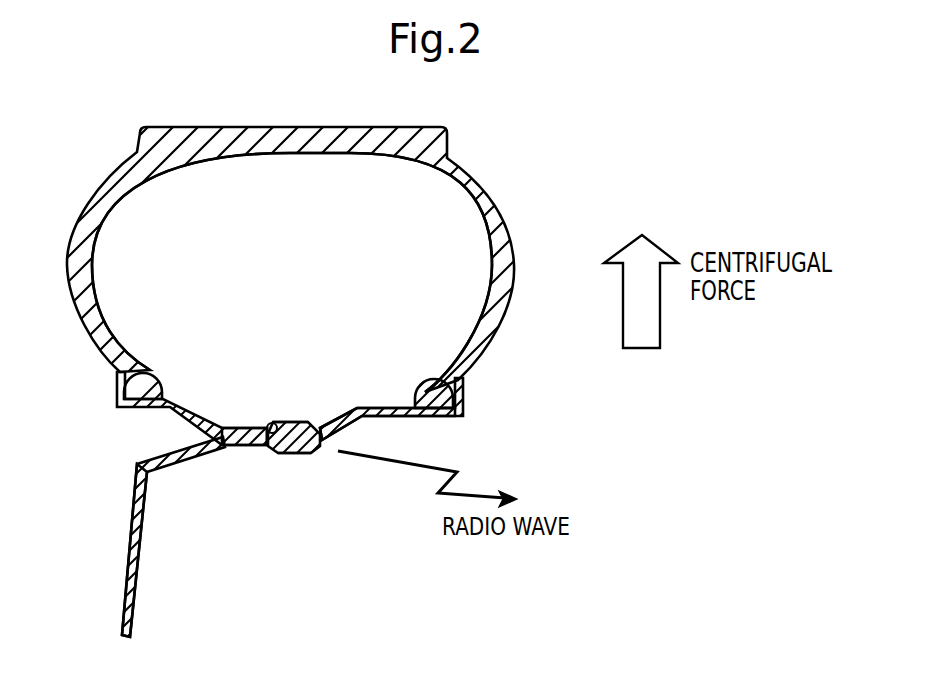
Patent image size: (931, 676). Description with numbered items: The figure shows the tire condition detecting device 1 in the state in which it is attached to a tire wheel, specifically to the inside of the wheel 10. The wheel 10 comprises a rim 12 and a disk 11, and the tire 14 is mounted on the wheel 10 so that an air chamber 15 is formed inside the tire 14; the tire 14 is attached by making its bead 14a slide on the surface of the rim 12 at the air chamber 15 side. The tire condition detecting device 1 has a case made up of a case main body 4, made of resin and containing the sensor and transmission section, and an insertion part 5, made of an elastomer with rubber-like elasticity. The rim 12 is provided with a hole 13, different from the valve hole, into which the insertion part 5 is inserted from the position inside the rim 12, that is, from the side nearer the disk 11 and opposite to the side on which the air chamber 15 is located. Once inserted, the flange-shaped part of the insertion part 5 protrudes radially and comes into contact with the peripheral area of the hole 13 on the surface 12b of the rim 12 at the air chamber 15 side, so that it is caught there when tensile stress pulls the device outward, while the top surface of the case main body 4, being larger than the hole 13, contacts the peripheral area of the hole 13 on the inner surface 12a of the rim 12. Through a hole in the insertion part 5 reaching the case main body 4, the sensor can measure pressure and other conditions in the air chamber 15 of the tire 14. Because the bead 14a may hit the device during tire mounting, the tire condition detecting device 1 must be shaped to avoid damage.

The tire condition detecting device 1 is at (306, 454).
The case main body 4 is at (276, 454).
The insertion part 5 is at (300, 422).
The wheel 10 is at (135, 492).
The disk 11 is at (137, 578).
The rim 12 is at (385, 426).
The inner surface of the rim 12a is at (233, 447).
The surface of the rim on the air chamber side 12b is at (345, 412).
The hole 13 is at (280, 422).
The tire 14 is at (500, 214).
The bead 14a is at (118, 372).
The air chamber 15 is at (282, 231).